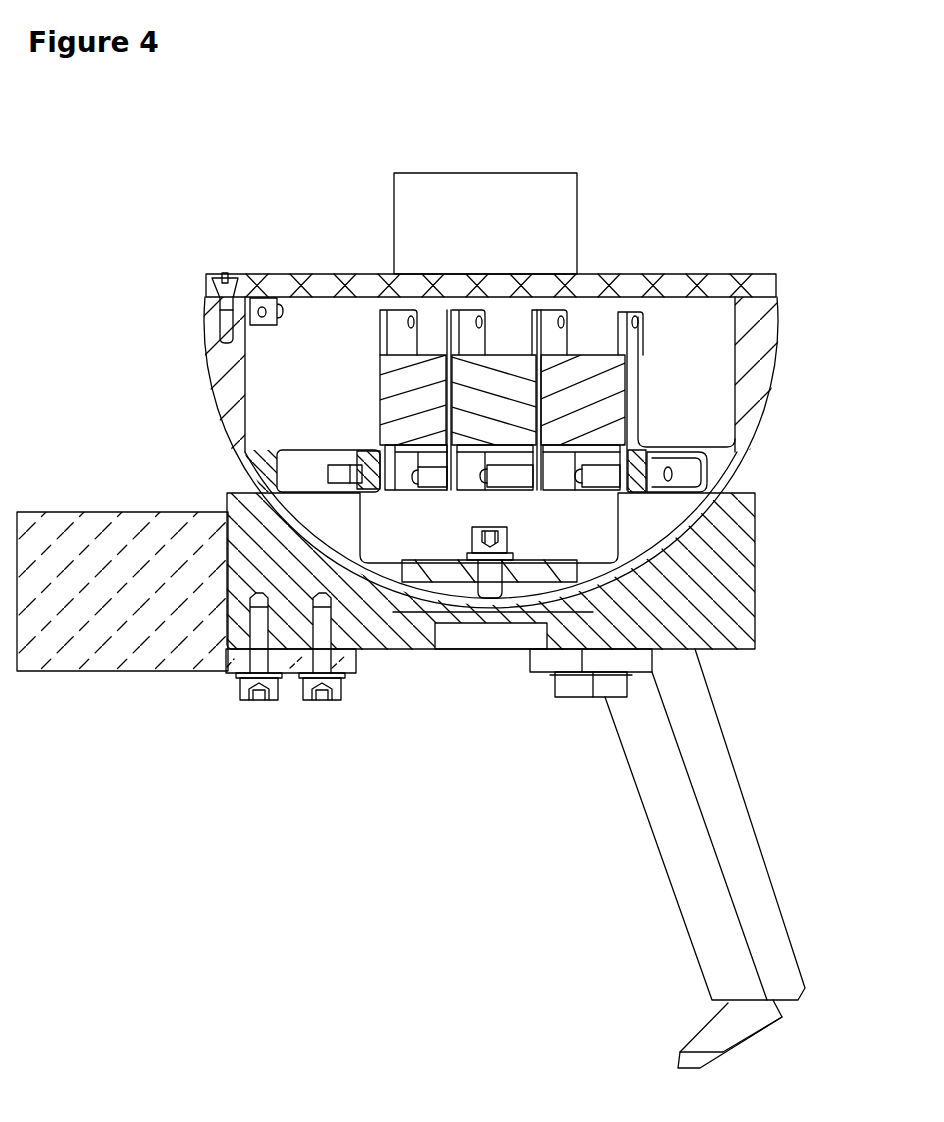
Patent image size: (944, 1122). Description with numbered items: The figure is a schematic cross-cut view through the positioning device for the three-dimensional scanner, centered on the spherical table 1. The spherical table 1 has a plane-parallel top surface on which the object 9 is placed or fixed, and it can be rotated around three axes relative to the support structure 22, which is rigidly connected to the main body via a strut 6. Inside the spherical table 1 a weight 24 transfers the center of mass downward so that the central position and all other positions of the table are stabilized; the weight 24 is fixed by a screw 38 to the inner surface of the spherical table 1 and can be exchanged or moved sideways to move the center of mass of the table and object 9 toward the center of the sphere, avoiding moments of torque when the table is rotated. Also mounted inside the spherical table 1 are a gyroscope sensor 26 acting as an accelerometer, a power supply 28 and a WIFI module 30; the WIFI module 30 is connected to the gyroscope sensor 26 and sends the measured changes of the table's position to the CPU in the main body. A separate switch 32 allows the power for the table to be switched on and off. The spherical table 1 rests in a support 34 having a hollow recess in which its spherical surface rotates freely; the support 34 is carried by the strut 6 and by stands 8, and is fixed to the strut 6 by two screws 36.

The spherical table 1 is at (313, 284).
The strut 6 is at (120, 637).
The stand 8 is at (708, 932).
The object 9 is at (423, 188).
The support structure 22 is at (377, 623).
The weight 24 is at (592, 573).
The gyroscope sensor 26 is at (624, 341).
The power supply 28 is at (499, 340).
The WIFI module 30 is at (434, 340).
The switch 32 is at (259, 294).
The support 34 is at (320, 477).
The screw 36 is at (250, 657).
The screw 38 is at (493, 568).